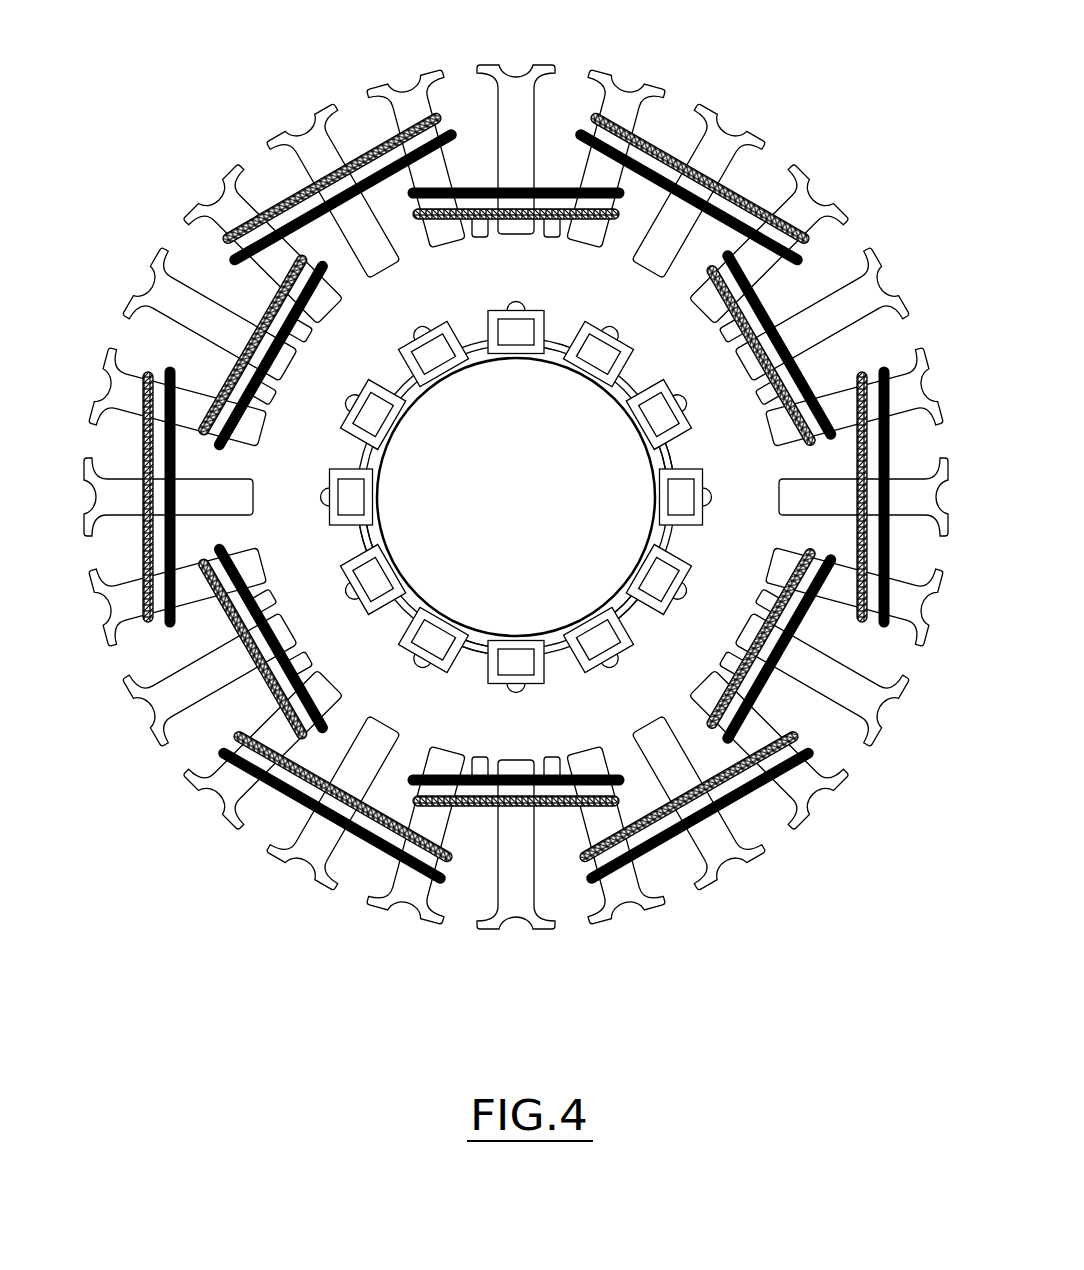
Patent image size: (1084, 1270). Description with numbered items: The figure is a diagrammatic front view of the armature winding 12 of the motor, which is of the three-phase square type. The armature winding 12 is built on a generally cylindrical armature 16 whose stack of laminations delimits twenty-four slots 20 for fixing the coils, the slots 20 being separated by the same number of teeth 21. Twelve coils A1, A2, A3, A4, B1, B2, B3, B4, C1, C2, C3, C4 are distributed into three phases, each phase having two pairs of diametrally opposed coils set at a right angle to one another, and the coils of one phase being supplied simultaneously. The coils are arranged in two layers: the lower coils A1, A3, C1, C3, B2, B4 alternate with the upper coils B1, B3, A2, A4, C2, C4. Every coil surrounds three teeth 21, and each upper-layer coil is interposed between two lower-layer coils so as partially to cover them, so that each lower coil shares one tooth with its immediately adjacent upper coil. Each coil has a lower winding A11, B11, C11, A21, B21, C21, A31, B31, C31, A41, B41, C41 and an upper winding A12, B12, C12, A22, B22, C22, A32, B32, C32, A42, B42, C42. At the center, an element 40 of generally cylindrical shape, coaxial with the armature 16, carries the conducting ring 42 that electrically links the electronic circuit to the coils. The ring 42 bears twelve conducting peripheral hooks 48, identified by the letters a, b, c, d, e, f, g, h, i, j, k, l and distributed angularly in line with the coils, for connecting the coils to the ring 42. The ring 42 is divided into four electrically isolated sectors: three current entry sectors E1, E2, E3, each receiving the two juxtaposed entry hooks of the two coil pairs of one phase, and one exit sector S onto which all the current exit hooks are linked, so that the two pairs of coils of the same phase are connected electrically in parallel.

The armature winding 12 is at (309, 118).
The armature 16 is at (310, 762).
The slots 20 is at (666, 113).
The teeth 21 is at (748, 140).
The element 40 is at (416, 401).
The conducting ring 42 is at (385, 463).
The conducting peripheral hooks 48 is at (528, 300).
The exit sector S is at (358, 543).
The current entry sector E1 is at (655, 460).
The current entry sector E2 is at (623, 607).
The current entry sector E3 is at (482, 660).
The coil A1 is at (516, 214).
The lower winding A11 is at (447, 220).
The upper winding A12 is at (467, 188).
The coil A2 is at (835, 497).
The lower winding A21 is at (862, 457).
The upper winding A22 is at (891, 470).
The coil A3 is at (516, 783).
The lower winding A31 is at (482, 773).
The upper winding A32 is at (522, 805).
The coil A4 is at (181, 497).
The lower winding A41 is at (178, 562).
The upper winding A42 is at (142, 538).
The coil B1 is at (696, 191).
The lower winding B11 is at (682, 240).
The upper winding B12 is at (662, 140).
The coil B2 is at (764, 642).
The lower winding B21 is at (714, 698).
The upper winding B22 is at (800, 636).
The coil B3 is at (343, 819).
The lower winding B31 is at (368, 805).
The upper winding B32 is at (367, 845).
The coil B4 is at (288, 353).
The lower winding B41 is at (240, 435).
The upper winding B42 is at (257, 340).
The coil C1 is at (745, 351).
The lower winding C11 is at (723, 335).
The upper winding C12 is at (760, 312).
The coil C2 is at (706, 812).
The lower winding C21 is at (723, 792).
The upper winding C22 is at (752, 800).
The coil C3 is at (273, 643).
The lower winding C31 is at (245, 573).
The upper winding C32 is at (270, 675).
The coil C4 is at (336, 179).
The lower winding C41 is at (382, 175).
The upper winding C42 is at (373, 147).
The hook a is at (516, 332).
The hook b is at (599, 353).
The hook c is at (658, 415).
The hook d is at (681, 497).
The hook e is at (658, 580).
The hook f is at (599, 639).
The hook g is at (516, 662).
The hook h is at (434, 639).
The hook i is at (372, 580).
The hook j is at (351, 497).
The hook k is at (372, 415).
The hook l is at (434, 353).